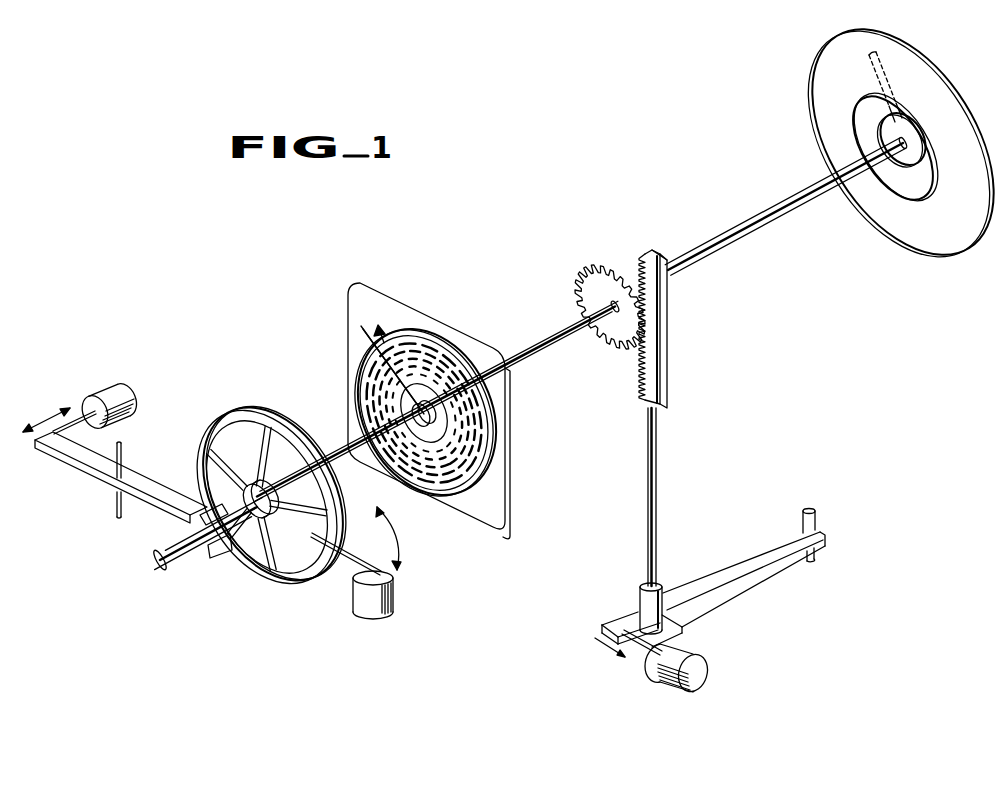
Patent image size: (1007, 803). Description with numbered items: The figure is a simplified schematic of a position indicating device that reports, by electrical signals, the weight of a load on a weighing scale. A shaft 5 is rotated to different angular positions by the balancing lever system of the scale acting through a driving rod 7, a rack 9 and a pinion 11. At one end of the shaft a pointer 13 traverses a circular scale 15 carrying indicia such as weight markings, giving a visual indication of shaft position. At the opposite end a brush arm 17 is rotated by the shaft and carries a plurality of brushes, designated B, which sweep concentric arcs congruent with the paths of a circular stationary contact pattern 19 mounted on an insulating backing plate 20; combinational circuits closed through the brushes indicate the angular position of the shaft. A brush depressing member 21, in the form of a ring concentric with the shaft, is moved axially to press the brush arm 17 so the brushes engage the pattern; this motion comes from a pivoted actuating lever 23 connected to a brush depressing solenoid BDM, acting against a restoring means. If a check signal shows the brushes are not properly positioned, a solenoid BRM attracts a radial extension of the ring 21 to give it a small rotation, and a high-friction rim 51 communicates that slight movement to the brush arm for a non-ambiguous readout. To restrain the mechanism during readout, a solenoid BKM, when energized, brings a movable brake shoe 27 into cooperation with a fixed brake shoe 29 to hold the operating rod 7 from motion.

The shaft 5 is at (772, 213).
The driving rod 7 is at (648, 533).
The rack 9 is at (664, 331).
The pinion 11 is at (583, 290).
The pointer 13 is at (893, 112).
The circular scale 15 is at (813, 98).
The brush arm 17 is at (372, 332).
The stationary contact pattern 19 is at (460, 495).
The backing plate 20 is at (511, 463).
The brush depressing member 21 is at (207, 440).
The actuating lever 23 is at (63, 460).
The movable brake shoe 27 is at (723, 607).
The fixed brake shoe 29 is at (622, 620).
The rim 51 is at (297, 441).
The brush depressing solenoid BDM is at (104, 392).
The solenoid BRM is at (368, 617).
The solenoid BKM is at (696, 660).